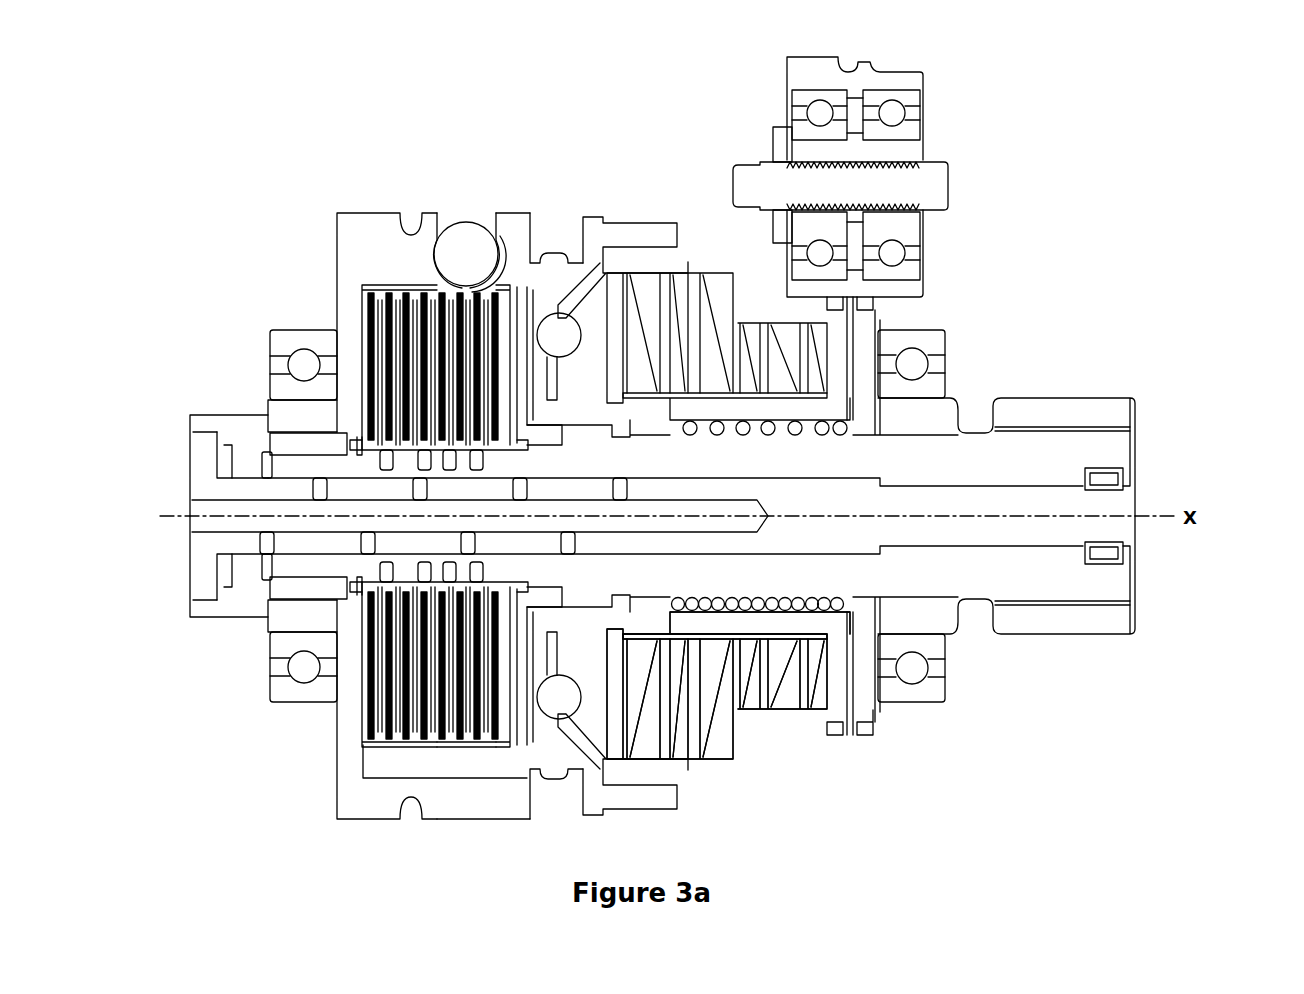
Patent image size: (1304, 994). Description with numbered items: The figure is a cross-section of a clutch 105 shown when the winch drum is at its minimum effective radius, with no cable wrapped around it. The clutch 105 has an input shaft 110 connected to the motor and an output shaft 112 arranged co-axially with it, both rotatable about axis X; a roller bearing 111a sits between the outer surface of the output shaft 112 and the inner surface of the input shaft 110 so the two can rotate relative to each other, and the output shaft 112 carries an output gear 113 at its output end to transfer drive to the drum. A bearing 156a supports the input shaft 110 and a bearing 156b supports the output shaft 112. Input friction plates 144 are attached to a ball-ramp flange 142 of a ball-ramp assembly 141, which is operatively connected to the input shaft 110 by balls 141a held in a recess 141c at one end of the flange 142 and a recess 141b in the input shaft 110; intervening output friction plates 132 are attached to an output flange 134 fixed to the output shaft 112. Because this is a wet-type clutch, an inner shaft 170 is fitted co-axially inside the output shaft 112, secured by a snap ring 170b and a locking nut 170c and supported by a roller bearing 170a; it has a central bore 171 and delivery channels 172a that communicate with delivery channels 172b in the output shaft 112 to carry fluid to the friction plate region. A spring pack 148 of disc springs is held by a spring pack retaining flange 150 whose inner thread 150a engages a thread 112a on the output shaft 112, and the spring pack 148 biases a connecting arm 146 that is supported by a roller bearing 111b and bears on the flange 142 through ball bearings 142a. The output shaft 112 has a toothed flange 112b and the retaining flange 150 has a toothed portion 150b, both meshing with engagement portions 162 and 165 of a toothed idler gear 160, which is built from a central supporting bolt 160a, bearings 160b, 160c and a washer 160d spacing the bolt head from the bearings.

The clutch 105 is at (178, 292).
The input shaft 110 is at (390, 262).
The roller bearing 111a is at (310, 440).
The roller bearing 111b is at (578, 427).
The output shaft 112 is at (947, 457).
The thread 112a is at (748, 598).
The toothed flange 112b is at (865, 708).
The output gear 113 is at (1041, 412).
The output friction plates 132 is at (363, 338).
The output flange 134 is at (368, 410).
The ball-ramp assembly 141 is at (489, 198).
The balls 141a is at (466, 240).
The recess 141b is at (433, 237).
The recess 141c is at (493, 263).
The ball-ramp flange 142 is at (527, 287).
The ball bearings 142a is at (559, 330).
The input friction plates 144 is at (378, 308).
The connecting arm 146 is at (595, 300).
The spring pack 148 is at (725, 345).
The spring pack retaining flange 150 is at (760, 618).
The thread 150a is at (772, 610).
The toothed portion 150b is at (838, 705).
The bearing 156a is at (295, 686).
The bearing 156b is at (925, 690).
The toothed idler gear 160 is at (962, 150).
The central supporting bolt 160a is at (922, 184).
The bearing 160b is at (810, 107).
The bearing 160c is at (900, 253).
The washer 160d is at (786, 145).
The engagement portion 162 is at (876, 305).
The engagement portion 165 is at (825, 300).
The inner shaft 170 is at (215, 483).
The roller bearing 170a is at (220, 575).
The snap ring 170b is at (270, 560).
The locking nut 170c is at (1122, 545).
The central bore 171 is at (388, 507).
The delivery channels 172a is at (263, 538).
The delivery channels 172b is at (380, 462).